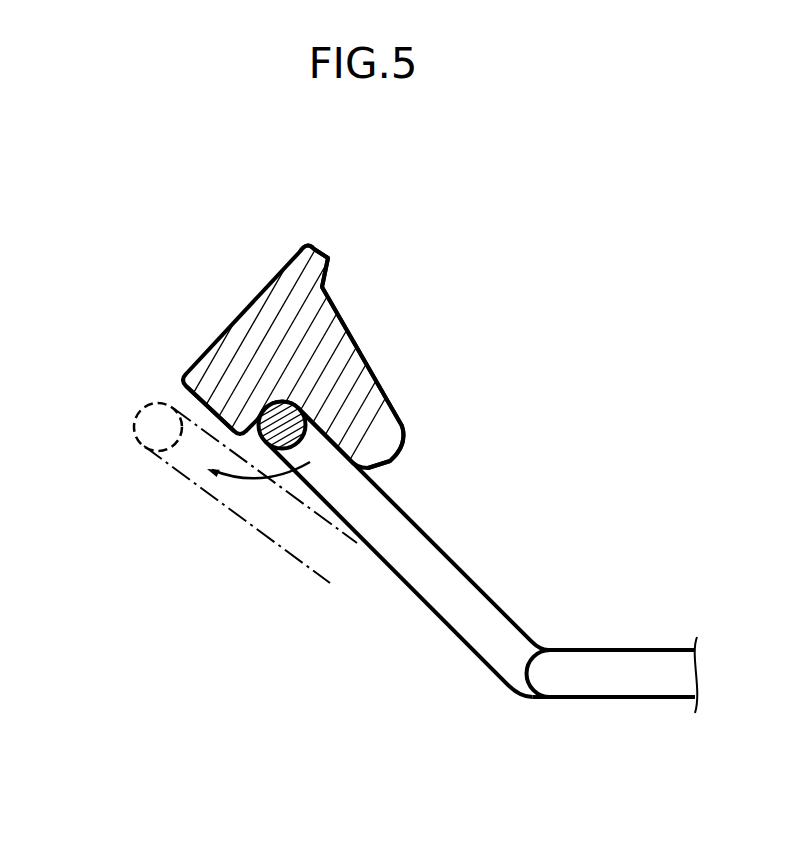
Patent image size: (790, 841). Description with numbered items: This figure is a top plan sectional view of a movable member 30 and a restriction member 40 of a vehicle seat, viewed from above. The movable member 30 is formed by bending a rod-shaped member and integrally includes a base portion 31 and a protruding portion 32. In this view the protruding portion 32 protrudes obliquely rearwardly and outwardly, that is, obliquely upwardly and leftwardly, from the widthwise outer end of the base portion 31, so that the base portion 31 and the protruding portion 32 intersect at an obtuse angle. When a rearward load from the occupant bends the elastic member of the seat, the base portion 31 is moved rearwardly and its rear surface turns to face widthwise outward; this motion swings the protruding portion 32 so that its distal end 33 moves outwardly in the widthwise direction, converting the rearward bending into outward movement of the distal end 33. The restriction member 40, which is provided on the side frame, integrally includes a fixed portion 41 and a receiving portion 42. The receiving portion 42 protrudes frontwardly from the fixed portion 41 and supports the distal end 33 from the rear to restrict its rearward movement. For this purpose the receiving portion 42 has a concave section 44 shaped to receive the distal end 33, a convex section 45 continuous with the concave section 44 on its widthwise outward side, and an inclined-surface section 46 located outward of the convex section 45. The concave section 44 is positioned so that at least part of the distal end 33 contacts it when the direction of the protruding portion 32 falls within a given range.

The movable member 30 is at (482, 592).
The base portion 31 is at (615, 662).
The protruding portion 32 is at (400, 517).
The distal end 33 is at (302, 416).
The restriction member 40 is at (287, 250).
The fixed portion 41 is at (317, 248).
The receiving portion 42 is at (410, 434).
The concave section 44 is at (296, 410).
The convex section 45 is at (248, 437).
The inclined-surface section 46 is at (183, 394).